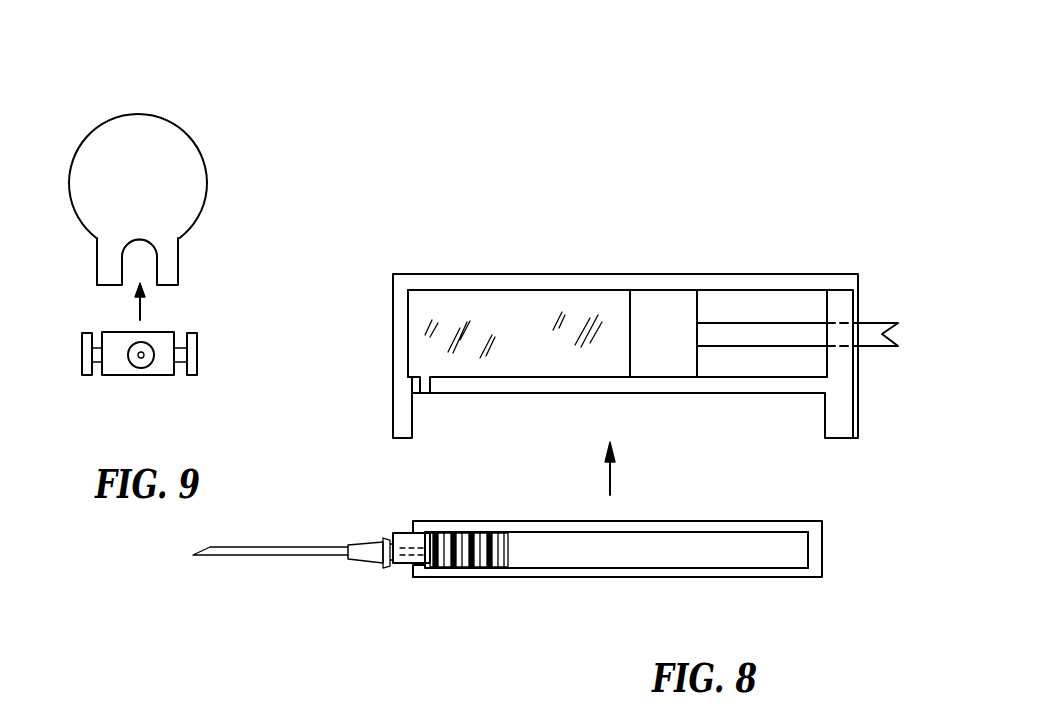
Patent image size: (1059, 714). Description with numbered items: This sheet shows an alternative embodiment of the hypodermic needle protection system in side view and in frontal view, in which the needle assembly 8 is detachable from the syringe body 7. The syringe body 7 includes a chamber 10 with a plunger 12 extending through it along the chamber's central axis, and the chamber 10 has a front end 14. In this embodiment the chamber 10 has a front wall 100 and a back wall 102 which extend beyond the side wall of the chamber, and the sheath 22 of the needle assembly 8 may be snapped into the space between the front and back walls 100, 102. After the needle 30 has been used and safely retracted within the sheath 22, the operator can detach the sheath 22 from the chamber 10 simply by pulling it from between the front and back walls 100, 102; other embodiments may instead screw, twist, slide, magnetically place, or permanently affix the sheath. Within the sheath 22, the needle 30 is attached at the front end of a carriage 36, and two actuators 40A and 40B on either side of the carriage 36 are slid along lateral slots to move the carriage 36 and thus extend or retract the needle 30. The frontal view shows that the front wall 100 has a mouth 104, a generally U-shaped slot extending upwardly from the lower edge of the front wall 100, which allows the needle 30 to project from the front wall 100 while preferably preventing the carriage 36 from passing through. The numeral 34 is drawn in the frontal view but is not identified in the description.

In FIG. 8, the syringe body 7 is at (612, 272).
In FIG. 8, the needle assembly 8 is at (598, 580).
In FIG. 9, the chamber 10 is at (93, 128).
In FIG. 8, the chamber 10 is at (546, 283).
In FIG. 8, the plunger 12 is at (722, 335).
In FIG. 9, the front end 14 is at (145, 167).
In FIG. 8, the sheath 22 is at (822, 535).
In FIG. 9, the needle 30 is at (143, 358).
In FIG. 8, the needle 30 is at (286, 545).
In FIG. 9, the needle hub bore 34 is at (150, 345).
In FIG. 9, the carriage 36 is at (113, 365).
In FIG. 8, the carriage 36 is at (400, 565).
In FIG. 9, the actuator button 40A is at (81, 345).
In FIG. 8, the actuator button 40A is at (463, 530).
In FIG. 9, the actuator button 40B is at (197, 348).
In FIG. 9, the front wall 100 is at (160, 268).
In FIG. 8, the front wall 100 is at (400, 420).
In FIG. 8, the back wall 102 is at (838, 408).
In FIG. 9, the mouth 104 is at (128, 265).